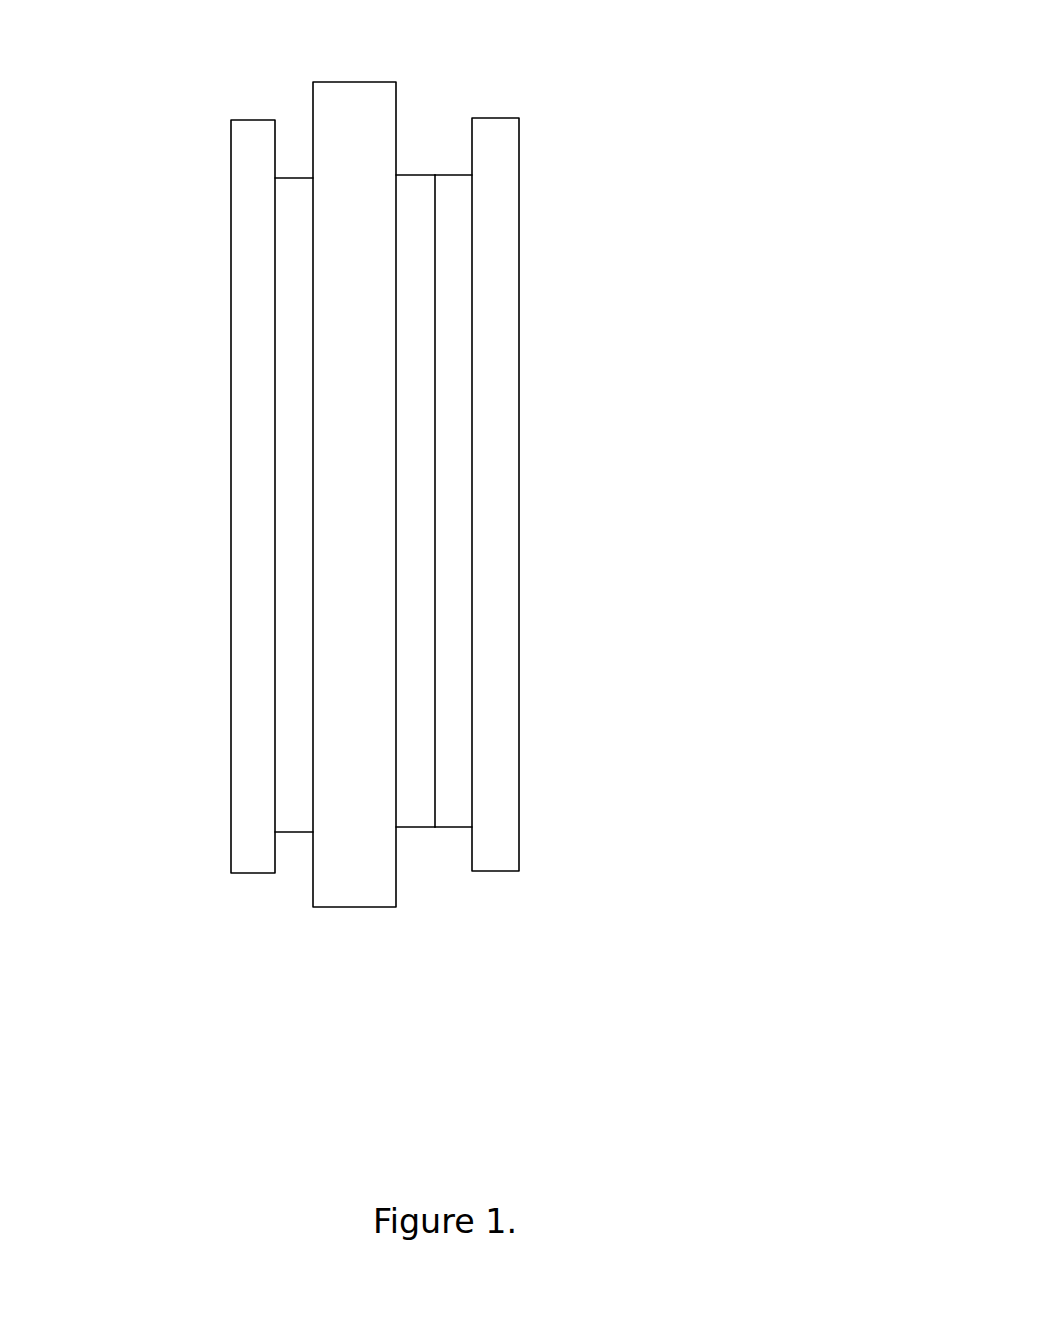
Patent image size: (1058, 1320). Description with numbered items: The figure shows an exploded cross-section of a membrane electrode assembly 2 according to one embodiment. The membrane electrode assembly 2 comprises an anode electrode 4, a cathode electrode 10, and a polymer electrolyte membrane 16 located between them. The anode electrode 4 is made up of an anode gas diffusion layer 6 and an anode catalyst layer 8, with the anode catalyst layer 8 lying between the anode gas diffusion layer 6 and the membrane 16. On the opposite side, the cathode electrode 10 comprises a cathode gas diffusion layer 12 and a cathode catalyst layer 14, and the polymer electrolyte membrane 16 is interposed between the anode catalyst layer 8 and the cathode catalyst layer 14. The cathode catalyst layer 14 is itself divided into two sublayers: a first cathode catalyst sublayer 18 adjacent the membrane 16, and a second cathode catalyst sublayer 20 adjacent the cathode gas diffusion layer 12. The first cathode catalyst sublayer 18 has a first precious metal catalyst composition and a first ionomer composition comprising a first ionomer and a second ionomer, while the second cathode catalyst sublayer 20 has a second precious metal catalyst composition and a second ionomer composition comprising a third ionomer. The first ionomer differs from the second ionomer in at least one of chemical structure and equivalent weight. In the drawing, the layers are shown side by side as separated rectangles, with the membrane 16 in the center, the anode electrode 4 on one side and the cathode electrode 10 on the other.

The membrane electrode assembly 2 is at (765, 209).
The anode electrode 4 is at (310, 890).
The anode gas diffusion layer 6 is at (240, 149).
The anode catalyst layer 8 is at (285, 349).
The cathode electrode 10 is at (522, 967).
The cathode gas diffusion layer 12 is at (497, 162).
The cathode catalyst layer 14 is at (467, 862).
The polymer electrolyte membrane 16 is at (357, 109).
The first cathode catalyst sublayer 18 is at (420, 493).
The second cathode catalyst sublayer 20 is at (449, 601).